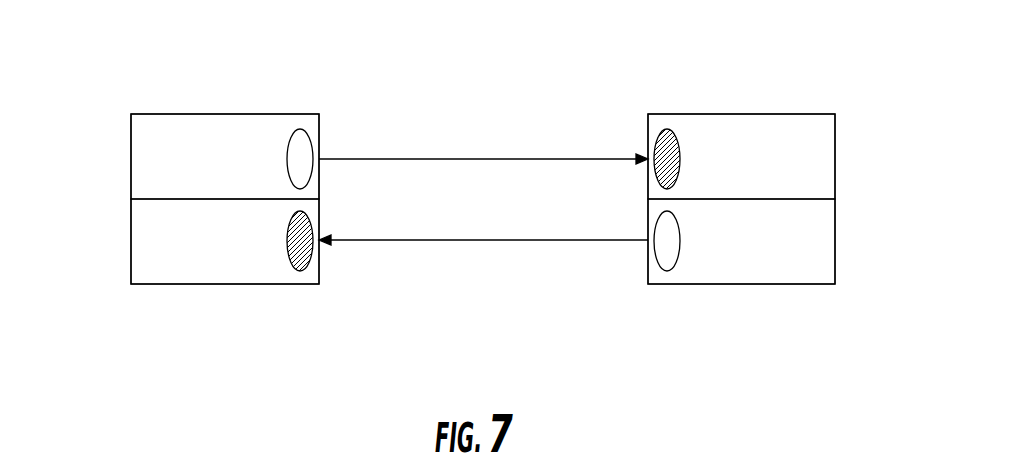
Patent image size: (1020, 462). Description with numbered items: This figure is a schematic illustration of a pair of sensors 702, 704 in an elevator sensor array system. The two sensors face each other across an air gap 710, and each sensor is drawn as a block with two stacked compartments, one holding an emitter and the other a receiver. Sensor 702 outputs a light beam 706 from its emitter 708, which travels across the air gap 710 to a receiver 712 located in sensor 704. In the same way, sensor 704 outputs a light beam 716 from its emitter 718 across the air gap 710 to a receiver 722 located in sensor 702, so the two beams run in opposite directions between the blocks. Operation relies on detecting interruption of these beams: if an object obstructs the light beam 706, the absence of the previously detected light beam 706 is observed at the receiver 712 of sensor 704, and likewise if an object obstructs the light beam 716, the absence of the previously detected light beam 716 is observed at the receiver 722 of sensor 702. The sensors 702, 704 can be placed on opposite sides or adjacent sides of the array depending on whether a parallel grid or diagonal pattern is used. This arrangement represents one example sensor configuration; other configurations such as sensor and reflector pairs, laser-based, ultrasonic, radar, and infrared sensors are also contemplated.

The sensor 702 is at (180, 201).
The sensor 704 is at (777, 199).
The light beam 706 is at (500, 157).
The emitter 708 is at (224, 113).
The air gap 710 is at (483, 159).
The receiver 712 is at (763, 113).
The light beam 716 is at (483, 242).
The emitter 718 is at (755, 285).
The receiver 722 is at (218, 285).